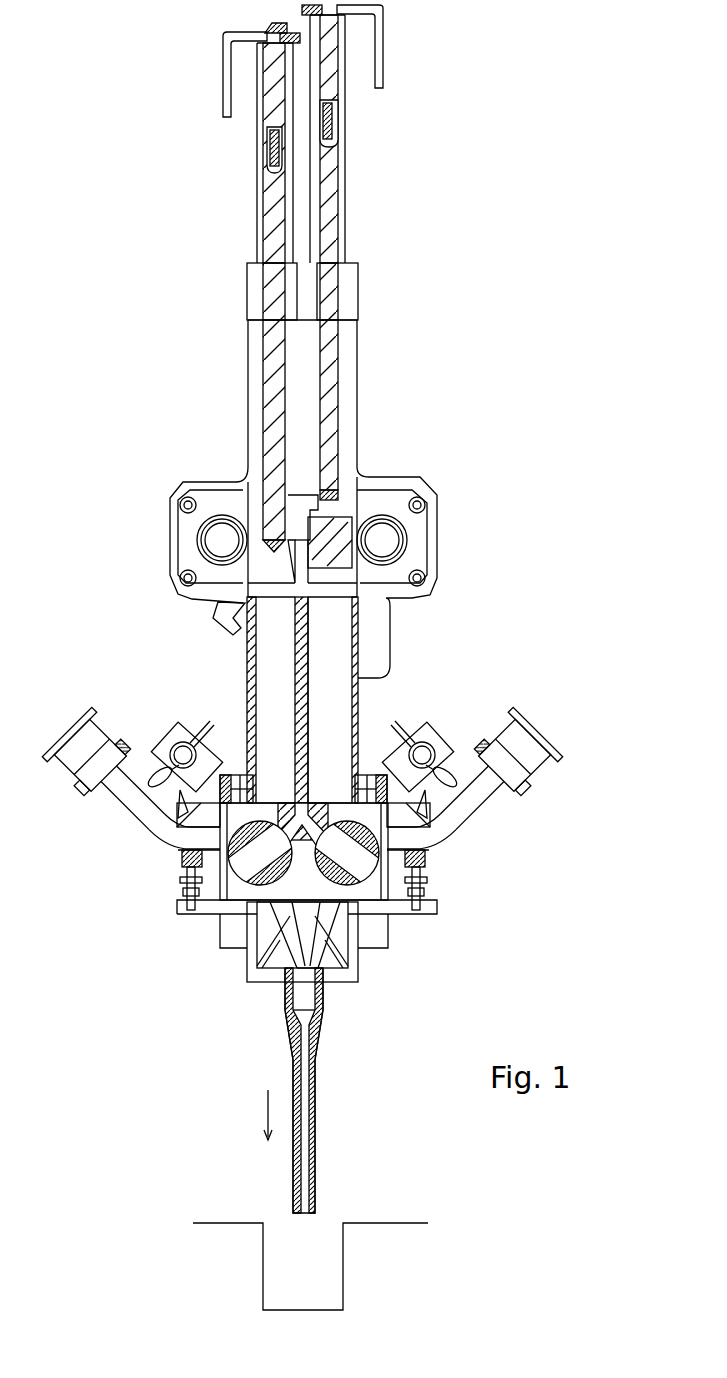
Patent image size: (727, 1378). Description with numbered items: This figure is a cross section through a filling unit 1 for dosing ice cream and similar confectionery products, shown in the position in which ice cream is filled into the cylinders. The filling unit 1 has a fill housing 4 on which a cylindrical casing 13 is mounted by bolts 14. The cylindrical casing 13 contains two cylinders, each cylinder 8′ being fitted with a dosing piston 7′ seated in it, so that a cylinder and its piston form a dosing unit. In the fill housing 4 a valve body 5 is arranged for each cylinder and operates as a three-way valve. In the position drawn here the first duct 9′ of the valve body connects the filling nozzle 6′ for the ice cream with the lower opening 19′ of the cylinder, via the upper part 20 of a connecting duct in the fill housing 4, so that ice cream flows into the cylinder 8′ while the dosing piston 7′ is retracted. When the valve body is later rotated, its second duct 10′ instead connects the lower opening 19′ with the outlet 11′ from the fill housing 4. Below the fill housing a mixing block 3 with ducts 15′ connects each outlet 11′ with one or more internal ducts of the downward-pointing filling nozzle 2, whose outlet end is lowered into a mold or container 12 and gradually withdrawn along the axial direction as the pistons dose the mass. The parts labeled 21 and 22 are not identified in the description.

The filling unit 1 is at (497, 453).
The filling nozzle 2 is at (315, 1092).
The mixing block 3 is at (345, 953).
The fill housing 4 is at (245, 880).
The valve body 5 is at (302, 878).
The filling nozzle 6′ is at (475, 768).
The dosing piston 7′ is at (323, 527).
The cylinder 8′ is at (335, 717).
The first duct 9′ is at (430, 855).
The second duct 10′ is at (427, 877).
The outlet 11′ is at (420, 903).
The mold or container 12 is at (310, 1266).
The cylindrical casing 13 is at (297, 483).
The bolts 14 is at (233, 768).
The duct 15′ is at (313, 953).
The lower opening 19′ is at (328, 798).
The upper part of connecting duct 20 is at (302, 824).
The mounting bracket 21 is at (165, 733).
The housing 22 is at (437, 543).